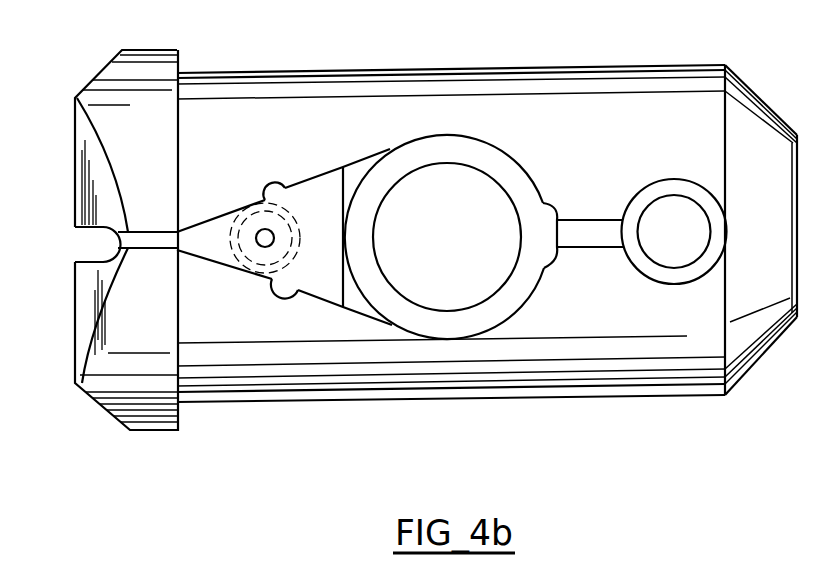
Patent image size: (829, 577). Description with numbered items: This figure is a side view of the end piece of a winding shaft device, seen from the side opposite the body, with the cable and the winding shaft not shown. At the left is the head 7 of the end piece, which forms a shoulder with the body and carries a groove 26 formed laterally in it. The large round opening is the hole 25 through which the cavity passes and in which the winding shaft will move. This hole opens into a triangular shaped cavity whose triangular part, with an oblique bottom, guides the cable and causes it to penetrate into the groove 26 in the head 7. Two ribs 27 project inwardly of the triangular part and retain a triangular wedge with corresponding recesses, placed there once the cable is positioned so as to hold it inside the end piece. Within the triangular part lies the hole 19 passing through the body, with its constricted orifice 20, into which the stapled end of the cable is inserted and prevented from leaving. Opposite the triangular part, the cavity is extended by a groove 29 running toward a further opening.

The head 7 is at (110, 403).
The hole 19 is at (267, 202).
The constricted orifice 20 is at (276, 234).
The hole 25 is at (451, 237).
The groove 26 is at (157, 240).
The ribs 27 is at (282, 282).
The groove 29 is at (593, 235).